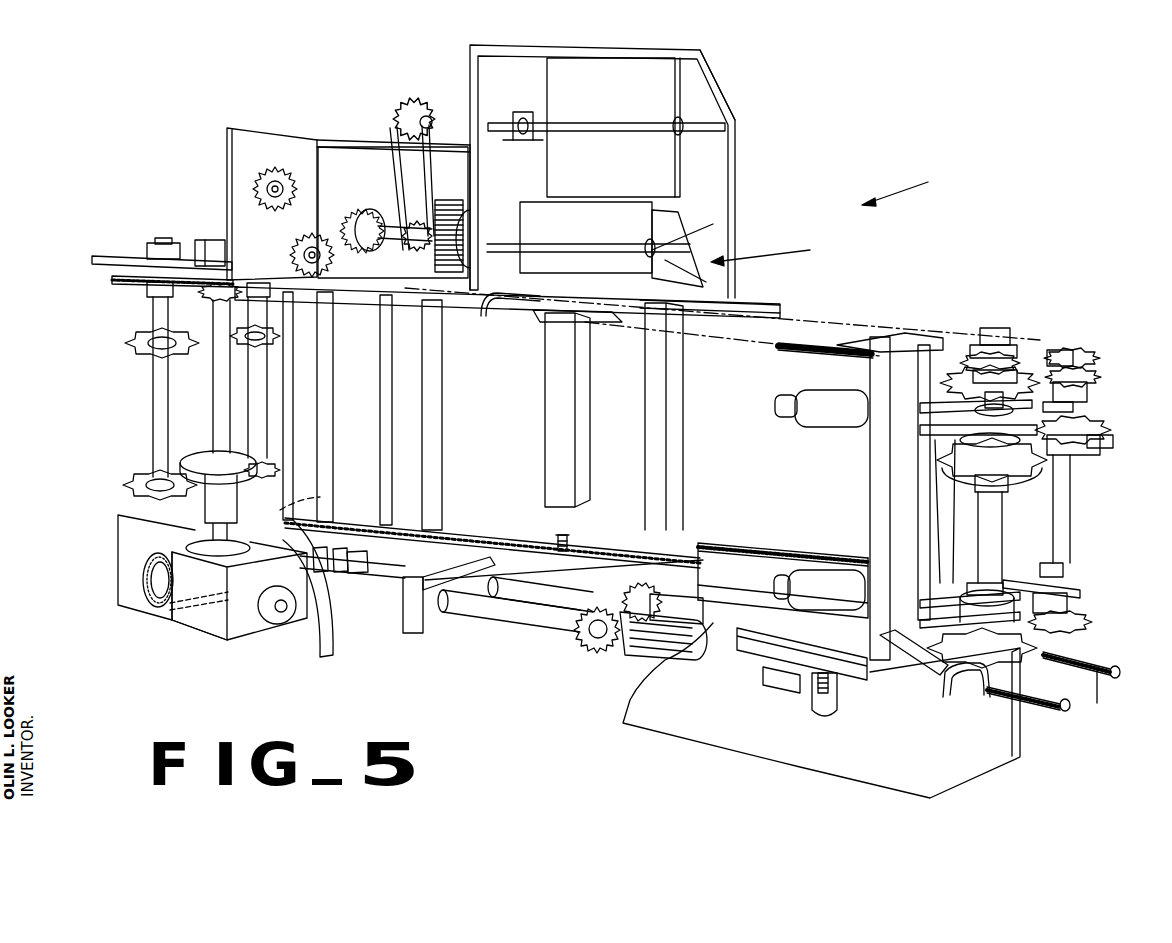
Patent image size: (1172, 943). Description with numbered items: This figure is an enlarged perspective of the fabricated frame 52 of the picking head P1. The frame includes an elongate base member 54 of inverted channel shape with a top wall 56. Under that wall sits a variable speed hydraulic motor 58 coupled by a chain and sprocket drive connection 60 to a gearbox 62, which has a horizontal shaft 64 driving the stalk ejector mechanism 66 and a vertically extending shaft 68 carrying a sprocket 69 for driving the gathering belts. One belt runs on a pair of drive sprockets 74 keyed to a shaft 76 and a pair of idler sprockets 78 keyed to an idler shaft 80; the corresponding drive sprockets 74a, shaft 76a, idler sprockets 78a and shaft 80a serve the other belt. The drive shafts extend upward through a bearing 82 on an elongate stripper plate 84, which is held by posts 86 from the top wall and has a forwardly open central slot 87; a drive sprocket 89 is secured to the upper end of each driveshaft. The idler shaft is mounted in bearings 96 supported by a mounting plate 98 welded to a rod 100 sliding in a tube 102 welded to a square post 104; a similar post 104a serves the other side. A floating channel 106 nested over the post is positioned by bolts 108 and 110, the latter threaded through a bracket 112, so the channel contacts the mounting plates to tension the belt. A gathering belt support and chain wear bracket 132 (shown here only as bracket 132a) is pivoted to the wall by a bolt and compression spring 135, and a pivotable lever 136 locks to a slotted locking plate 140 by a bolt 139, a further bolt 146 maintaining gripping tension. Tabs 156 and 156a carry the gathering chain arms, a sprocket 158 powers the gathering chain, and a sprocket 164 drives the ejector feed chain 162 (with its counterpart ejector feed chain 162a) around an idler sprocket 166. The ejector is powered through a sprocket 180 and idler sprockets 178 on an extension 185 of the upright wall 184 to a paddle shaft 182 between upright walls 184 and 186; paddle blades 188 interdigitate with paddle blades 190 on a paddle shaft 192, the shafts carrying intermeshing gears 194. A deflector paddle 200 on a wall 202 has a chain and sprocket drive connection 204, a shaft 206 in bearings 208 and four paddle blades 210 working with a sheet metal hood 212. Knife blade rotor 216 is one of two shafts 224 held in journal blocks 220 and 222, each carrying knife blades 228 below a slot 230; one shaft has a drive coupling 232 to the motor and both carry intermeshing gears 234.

The picking head P1 is at (910, 185).
The fabricated frame 52 is at (105, 530).
The elongate base member 54 is at (693, 737).
The top wall 56 is at (470, 530).
The variable speed hydraulic motor 58 is at (313, 510).
The chain and sprocket drive connection 60 is at (143, 572).
The gearbox 62 is at (185, 620).
The horizontal shaft 64 is at (282, 610).
The stalk ejector mechanism 66 is at (776, 250).
The vertically extending shaft 68 is at (213, 430).
The sprocket 69 is at (200, 292).
The drive sprockets 74 is at (125, 345).
The drive sprockets 74a is at (240, 345).
The shaft 76 is at (152, 395).
The shaft 76a is at (252, 393).
The idler sprockets 78 is at (1063, 468).
The idler sprockets 78a is at (1102, 440).
The idler shaft 80 is at (1000, 520).
The idler shaft 80a is at (1068, 500).
The bearing 82 is at (157, 247).
The stripper plate 84 is at (116, 258).
The posts 86 is at (617, 382).
The central slot 87 is at (717, 297).
The drive sprocket 89 is at (115, 277).
The bearings 96 is at (957, 403).
The mounting plate 98 is at (950, 432).
The rod 100 is at (880, 412).
The tube 102 is at (827, 392).
The square post 104 is at (870, 448).
The post 104a is at (962, 332).
The floating channel 106 is at (892, 470).
The bolt 108 is at (783, 350).
The bolt 110 is at (1047, 708).
The bracket 112 is at (973, 703).
The gathering belt support and chain wear bracket 132 is at (763, 588).
The bracket 132a is at (705, 540).
The bolt and compression spring 135 is at (562, 532).
The pivotable lever 136 is at (838, 710).
The bolt 139 is at (840, 684).
The slotted locking plate 140 is at (772, 690).
The bolt 146 is at (793, 637).
The tabs 156 is at (538, 312).
The tabs 156a is at (780, 305).
The sprocket 158 is at (1085, 390).
The ejector feed chain 162 is at (647, 338).
The ejector feed chain 162a is at (1047, 338).
The sprocket 164 is at (1018, 350).
The idler sprocket 166 is at (508, 293).
The idler sprockets 178 is at (290, 258).
The sprocket 180 is at (356, 214).
The paddle shaft 182 is at (412, 236).
The upright wall 184 is at (353, 167).
The extension 185 is at (232, 150).
The upright wall 186 is at (516, 172).
The paddle blades 188 is at (525, 245).
The paddle blades 190 is at (713, 233).
The paddle shaft 192 is at (703, 252).
The intermeshing gears 194 is at (462, 202).
The deflector paddle 200 is at (692, 178).
The wall 202 is at (353, 140).
The chain and sprocket drive connection 204 is at (386, 108).
The shaft 206 is at (676, 122).
The bearings 208 is at (515, 112).
The paddle blades 210 is at (653, 172).
The sheet metal hood 212 is at (710, 58).
The knife blade rotor 216 is at (642, 670).
The journal block 220 is at (402, 615).
The journal block 222 is at (663, 587).
The shafts 224 is at (530, 598).
The knife blade 228 is at (680, 653).
The slot 230 is at (722, 584).
The drive coupling 232 is at (362, 597).
The intermeshing gears 234 is at (627, 592).